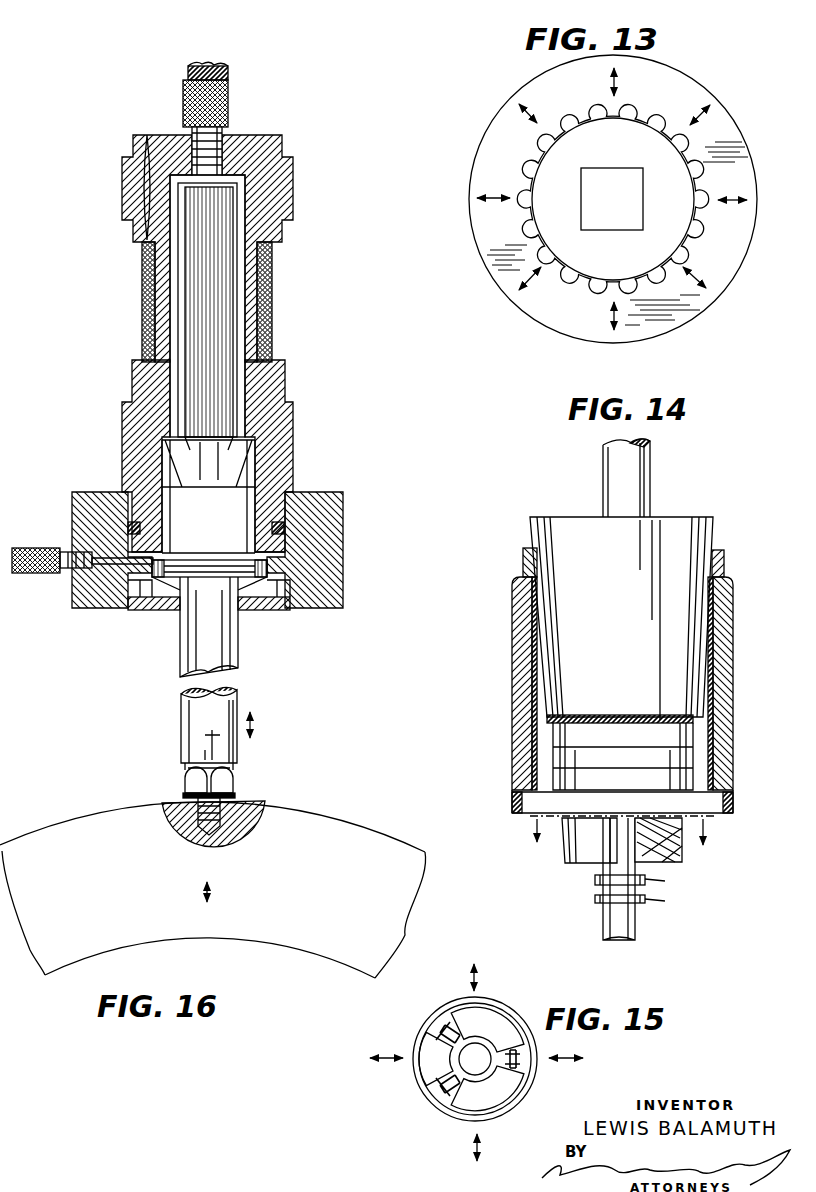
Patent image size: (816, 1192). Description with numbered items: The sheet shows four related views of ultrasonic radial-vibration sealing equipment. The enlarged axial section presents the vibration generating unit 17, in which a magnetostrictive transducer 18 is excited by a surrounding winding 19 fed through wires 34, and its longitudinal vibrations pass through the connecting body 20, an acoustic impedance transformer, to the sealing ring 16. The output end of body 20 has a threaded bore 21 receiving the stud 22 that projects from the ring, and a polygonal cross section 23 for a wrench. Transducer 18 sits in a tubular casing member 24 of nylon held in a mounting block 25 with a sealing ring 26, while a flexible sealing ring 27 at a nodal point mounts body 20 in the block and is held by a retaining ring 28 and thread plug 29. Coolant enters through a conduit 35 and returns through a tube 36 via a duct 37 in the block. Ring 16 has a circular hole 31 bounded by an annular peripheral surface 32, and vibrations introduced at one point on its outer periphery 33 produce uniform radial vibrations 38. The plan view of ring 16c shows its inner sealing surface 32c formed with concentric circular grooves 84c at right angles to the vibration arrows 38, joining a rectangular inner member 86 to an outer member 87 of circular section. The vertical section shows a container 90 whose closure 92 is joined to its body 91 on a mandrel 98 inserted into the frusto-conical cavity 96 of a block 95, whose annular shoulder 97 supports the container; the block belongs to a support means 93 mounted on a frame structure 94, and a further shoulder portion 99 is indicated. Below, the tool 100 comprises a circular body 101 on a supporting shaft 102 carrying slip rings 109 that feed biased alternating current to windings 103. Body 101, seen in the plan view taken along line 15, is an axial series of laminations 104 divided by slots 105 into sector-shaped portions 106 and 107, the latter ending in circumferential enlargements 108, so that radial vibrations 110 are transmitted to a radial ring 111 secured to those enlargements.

In FIG. 14, the section line 15— 15 is at (624, 848).
In FIG. 16, the sealing ring 16 is at (343, 813).
In FIG. 13, the ring 16c is at (642, 338).
In FIG. 16, the vibration generating unit 17 is at (299, 196).
In FIG. 16, the transducer 18 is at (224, 261).
In FIG. 16, the winding 19 is at (271, 300).
In FIG. 16, the connecting body 20 is at (232, 457).
In FIG. 16, the threaded bore 21 is at (181, 748).
In FIG. 16, the stud 22 is at (232, 818).
In FIG. 16, the polygonal cross section 23 is at (186, 781).
In FIG. 16, the tubular casing member 24 is at (286, 388).
In FIG. 16, the mounting block 25 is at (72, 505).
In FIG. 16, the sealing ring 26 is at (284, 528).
In FIG. 16, the flexible sealing ring 27 is at (268, 568).
In FIG. 16, the retaining ring 28 is at (137, 612).
In FIG. 16, the thread plug 29 is at (126, 606).
In FIG. 16, the circular hole 31 is at (226, 941).
In FIG. 16, the annular peripheral surface 32 is at (281, 951).
In FIG. 13, the inner sealing surface 32c is at (530, 235).
In FIG. 16, the outer periphery 33 is at (386, 836).
In FIG. 16, the wires 34 is at (147, 240).
In FIG. 16, the conduit 35 is at (230, 74).
In FIG. 16, the tube 36 is at (26, 574).
In FIG. 16, the duct 37 is at (100, 556).
In FIG. 16, the radial vibrations 38 is at (213, 893).
In FIG. 13, the radial vibrations 38 is at (700, 272).
In FIG. 13, the concentric circular grooves 84c is at (632, 108).
In FIG. 13, the inner member 86 is at (617, 217).
In FIG. 13, the outer member 87 is at (622, 272).
In FIG. 14, the container 90 is at (521, 571).
In FIG. 14, the body 91 is at (724, 566).
In FIG. 14, the closure 92 is at (624, 714).
In FIG. 14, the support means 93 is at (511, 697).
In FIG. 14, the frame structure 94 is at (512, 798).
In FIG. 14, the block 95 is at (513, 742).
In FIG. 14, the frusto-conical cavity 96 is at (535, 628).
In FIG. 14, the annular shoulder 97 is at (578, 780).
In FIG. 14, the mandrel 98 is at (680, 535).
In FIG. 14, the cylinder 99 is at (672, 780).
In FIG. 14, the tool 100 is at (560, 870).
In FIG. 15, the tool 100 is at (521, 993).
In FIG. 15, the body 101 is at (490, 1080).
In FIG. 14, the supporting shaft 102 is at (638, 925).
In FIG. 14, the windings 103 is at (665, 820).
In FIG. 14, the laminations 104 is at (672, 865).
In FIG. 15, the slots 105 is at (442, 1036).
In FIG. 15, the sector-shaped portions 106 is at (437, 1066).
In FIG. 15, the sectors 107 is at (452, 1097).
In FIG. 15, the circumferential enlargements 108 is at (455, 1020).
In FIG. 14, the slip rings 109 is at (606, 902).
In FIG. 15, the radial vibrations 110 is at (385, 1060).
In FIG. 14, the radial ring 111 is at (685, 822).
In FIG. 15, the radial ring 111 is at (432, 1104).